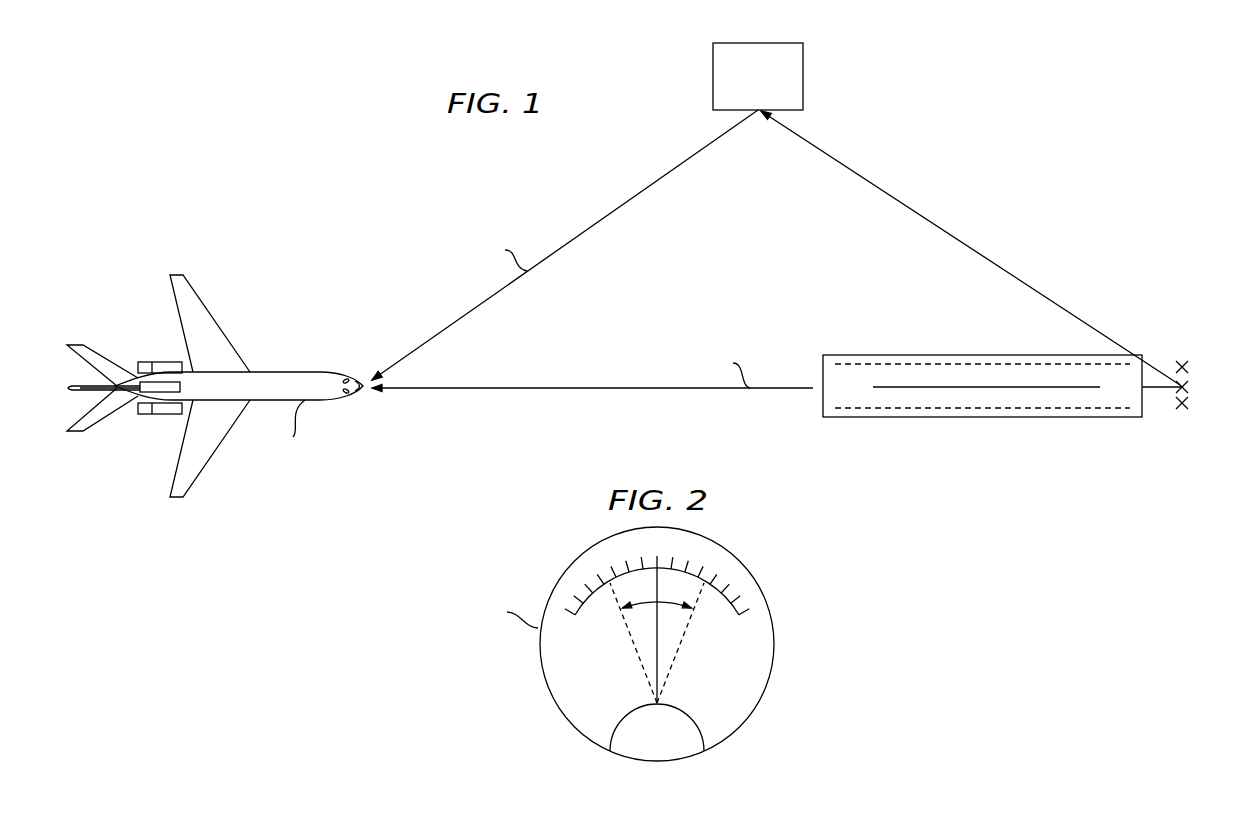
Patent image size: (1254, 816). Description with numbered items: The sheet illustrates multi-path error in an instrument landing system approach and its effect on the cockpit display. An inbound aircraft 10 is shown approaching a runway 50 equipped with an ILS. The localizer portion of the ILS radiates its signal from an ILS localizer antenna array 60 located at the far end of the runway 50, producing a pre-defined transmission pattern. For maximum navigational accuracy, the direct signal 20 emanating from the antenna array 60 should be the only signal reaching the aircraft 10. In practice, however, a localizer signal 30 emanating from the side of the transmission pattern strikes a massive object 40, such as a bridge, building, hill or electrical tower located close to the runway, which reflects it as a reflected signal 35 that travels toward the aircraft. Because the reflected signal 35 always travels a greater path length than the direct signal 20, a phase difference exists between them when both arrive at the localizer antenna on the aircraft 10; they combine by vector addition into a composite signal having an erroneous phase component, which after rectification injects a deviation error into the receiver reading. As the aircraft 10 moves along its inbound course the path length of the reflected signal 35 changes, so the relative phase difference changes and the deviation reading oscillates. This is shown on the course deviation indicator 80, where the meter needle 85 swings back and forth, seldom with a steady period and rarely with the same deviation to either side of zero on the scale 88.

In FIG. 1, the aircraft 10 is at (287, 372).
In FIG. 1, the direct signal 20 is at (578, 388).
In FIG. 1, the localizer signal 30 is at (937, 227).
In FIG. 1, the reflected signal 35 is at (620, 207).
In FIG. 1, the massive object 40 is at (803, 78).
In FIG. 1, the runway 50 is at (865, 417).
In FIG. 1, the ILS localizer antenna array 60 is at (1190, 387).
In FIG. 2, the course deviation indicator (CDI) 80 is at (773, 663).
In FIG. 2, the meter needle 85 is at (660, 643).
In FIG. 2, the scale 88 is at (716, 589).